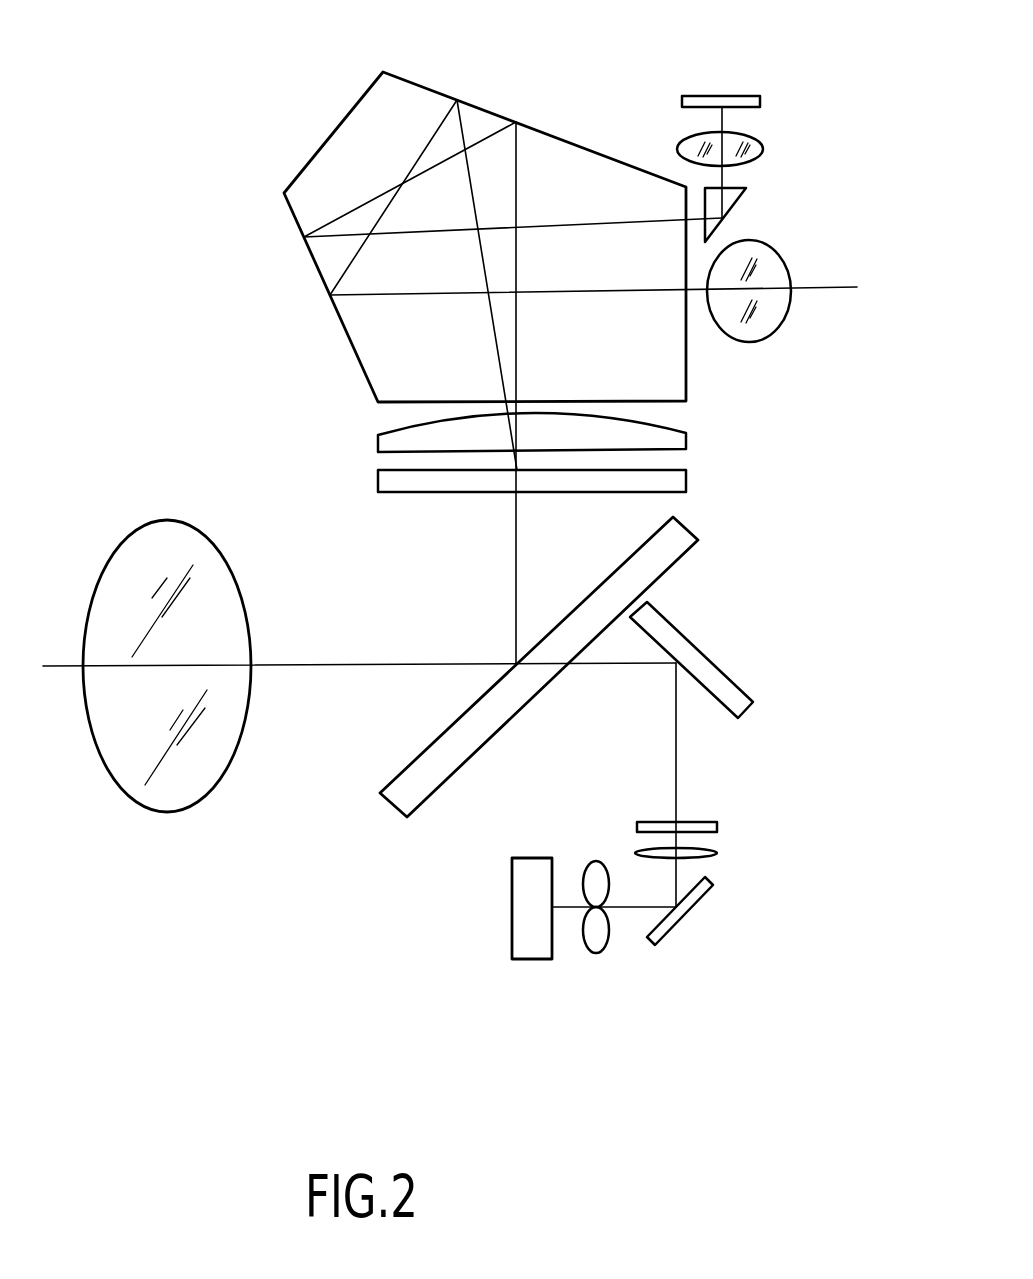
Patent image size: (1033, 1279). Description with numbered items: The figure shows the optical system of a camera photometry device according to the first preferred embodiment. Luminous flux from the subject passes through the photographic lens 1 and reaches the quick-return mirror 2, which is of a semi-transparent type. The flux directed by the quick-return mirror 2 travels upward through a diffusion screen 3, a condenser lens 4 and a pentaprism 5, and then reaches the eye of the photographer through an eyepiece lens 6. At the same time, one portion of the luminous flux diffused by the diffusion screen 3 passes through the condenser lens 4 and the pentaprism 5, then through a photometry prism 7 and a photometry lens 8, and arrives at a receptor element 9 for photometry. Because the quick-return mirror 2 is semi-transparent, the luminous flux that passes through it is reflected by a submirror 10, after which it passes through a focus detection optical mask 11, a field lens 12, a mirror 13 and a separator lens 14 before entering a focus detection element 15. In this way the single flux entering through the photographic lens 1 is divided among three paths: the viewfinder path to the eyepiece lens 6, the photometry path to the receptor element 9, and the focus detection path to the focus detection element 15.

The photographic lens 1 is at (207, 795).
The quick-return mirror 2 is at (522, 712).
The diffusion screen 3 is at (687, 478).
The condenser lens 4 is at (686, 440).
The pentaprism 5 is at (457, 98).
The eyepiece lens 6 is at (790, 305).
The photometry prism 7 is at (748, 202).
The photometry lens 8 is at (763, 143).
The receptor element 9 is at (727, 95).
The submirror 10 is at (702, 645).
The focus detection optical mask 11 is at (717, 825).
The field lens 12 is at (717, 852).
The mirror 13 is at (690, 912).
The separator lens 14 is at (605, 953).
The focus detection element 15 is at (527, 960).